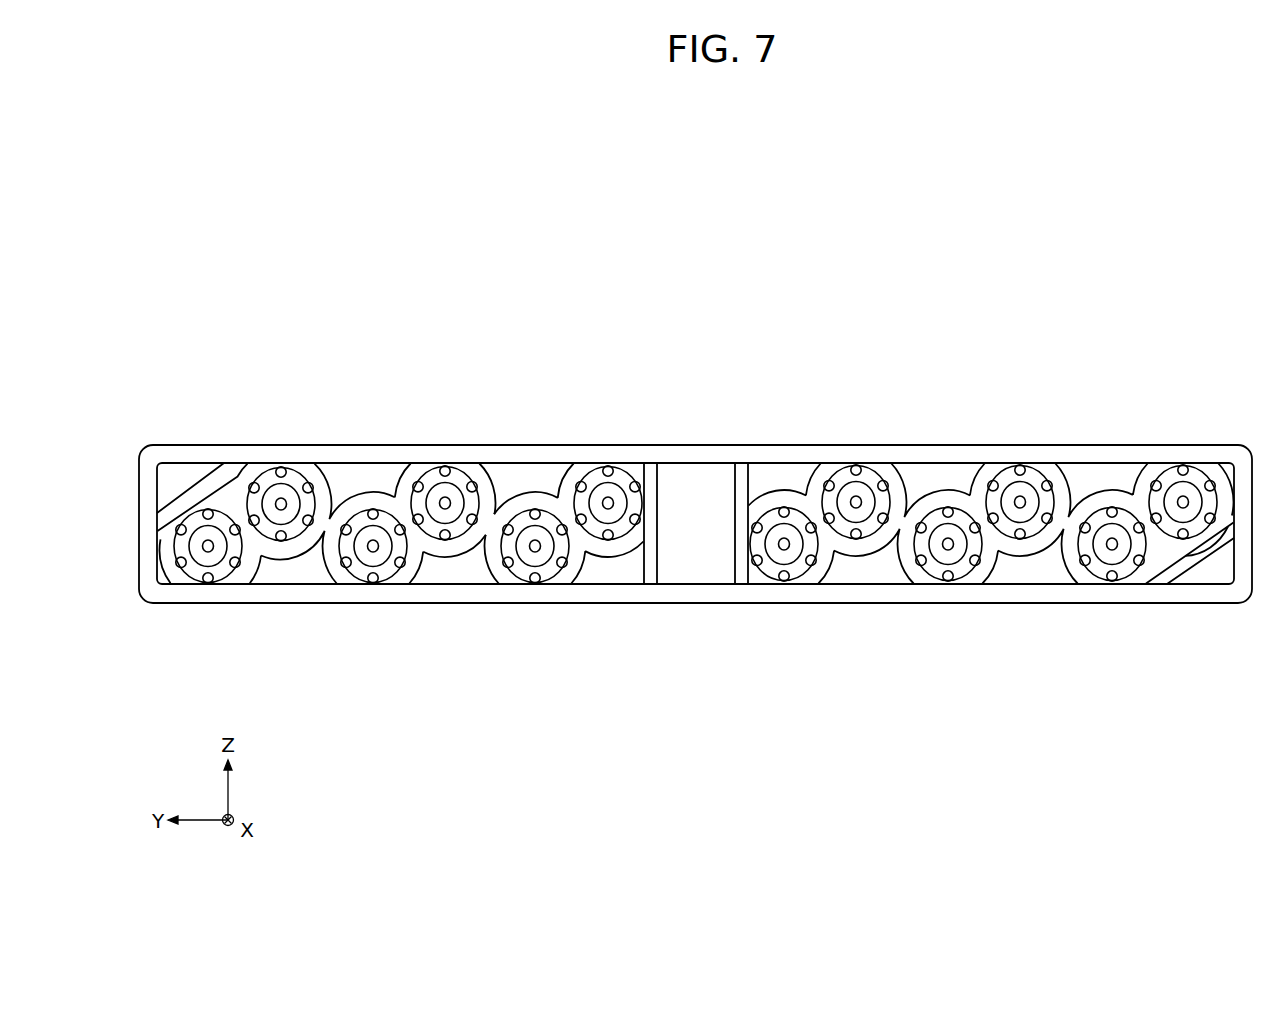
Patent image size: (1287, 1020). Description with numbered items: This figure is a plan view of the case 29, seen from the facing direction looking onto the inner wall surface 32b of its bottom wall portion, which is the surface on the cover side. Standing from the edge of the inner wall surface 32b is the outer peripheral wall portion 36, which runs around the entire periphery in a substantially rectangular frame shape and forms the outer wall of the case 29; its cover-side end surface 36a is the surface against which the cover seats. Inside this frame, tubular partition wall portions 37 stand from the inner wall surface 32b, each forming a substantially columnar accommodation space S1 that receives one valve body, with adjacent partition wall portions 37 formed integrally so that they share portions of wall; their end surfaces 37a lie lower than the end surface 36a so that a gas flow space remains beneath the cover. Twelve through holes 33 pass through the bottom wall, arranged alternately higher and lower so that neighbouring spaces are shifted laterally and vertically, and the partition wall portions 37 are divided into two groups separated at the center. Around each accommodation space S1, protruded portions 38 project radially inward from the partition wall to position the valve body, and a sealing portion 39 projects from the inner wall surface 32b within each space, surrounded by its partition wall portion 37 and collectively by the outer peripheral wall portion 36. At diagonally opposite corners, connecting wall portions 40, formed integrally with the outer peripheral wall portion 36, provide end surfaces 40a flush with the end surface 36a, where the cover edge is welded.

The case 29 is at (1254, 478).
The inner wall surface 32b is at (525, 478).
The through hole 33 is at (371, 597).
The outer peripheral wall portion 36 is at (444, 462).
The end surface of the outer peripheral wall portion 36a is at (451, 459).
The partition wall portion 37 is at (567, 507).
The end surface of the partition wall portion 37a is at (575, 474).
The protruded portion 38 is at (371, 537).
The sealing portion 39 is at (380, 557).
The connecting wall portion 40 is at (1192, 553).
The end surface of the connecting wall portion 40a is at (1197, 607).
The accommodation space S1 is at (695, 537).